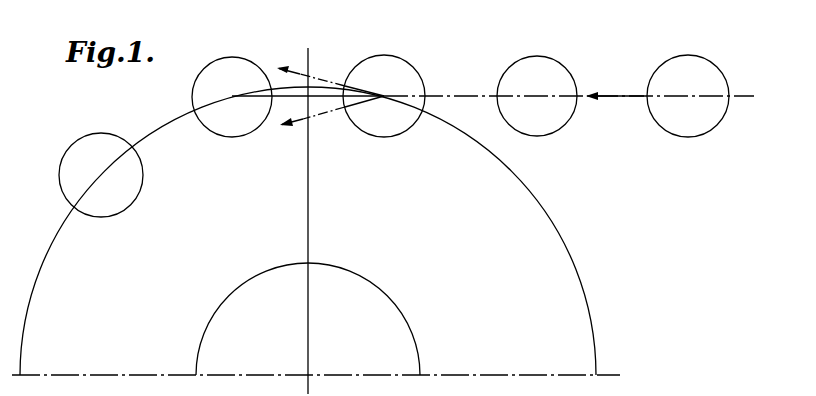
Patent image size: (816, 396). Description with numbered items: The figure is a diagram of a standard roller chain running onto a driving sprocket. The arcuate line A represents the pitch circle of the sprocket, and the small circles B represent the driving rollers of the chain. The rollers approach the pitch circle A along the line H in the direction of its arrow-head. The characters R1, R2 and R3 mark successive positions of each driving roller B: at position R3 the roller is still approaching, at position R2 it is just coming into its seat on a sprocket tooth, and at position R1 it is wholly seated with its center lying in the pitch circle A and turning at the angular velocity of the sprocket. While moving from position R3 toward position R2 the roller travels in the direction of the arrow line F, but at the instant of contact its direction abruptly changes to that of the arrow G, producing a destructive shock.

The arcuate line A is at (566, 256).
The small circles B is at (460, 103).
The position R1 is at (232, 86).
The position R2 is at (384, 86).
The position R3 is at (539, 86).
The arrow G is at (330, 77).
The arrow line F is at (332, 115).
The line H is at (615, 87).